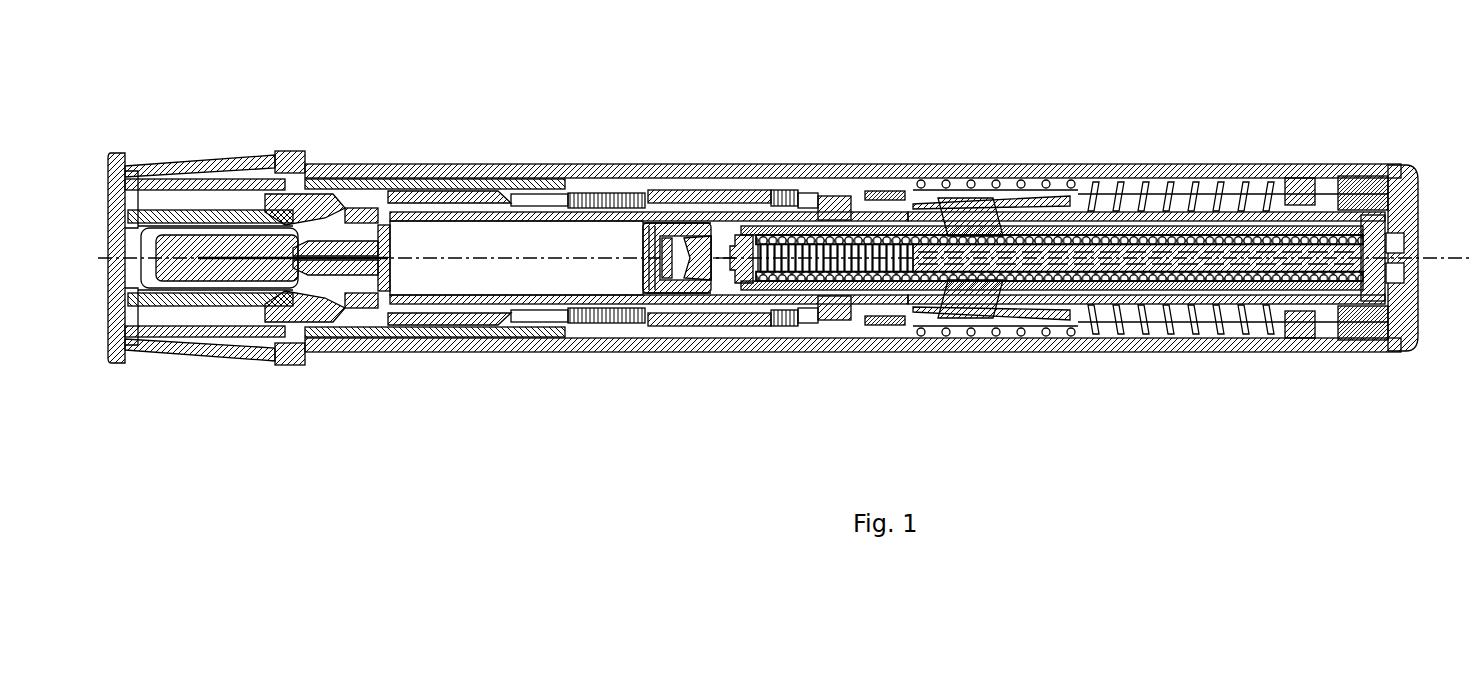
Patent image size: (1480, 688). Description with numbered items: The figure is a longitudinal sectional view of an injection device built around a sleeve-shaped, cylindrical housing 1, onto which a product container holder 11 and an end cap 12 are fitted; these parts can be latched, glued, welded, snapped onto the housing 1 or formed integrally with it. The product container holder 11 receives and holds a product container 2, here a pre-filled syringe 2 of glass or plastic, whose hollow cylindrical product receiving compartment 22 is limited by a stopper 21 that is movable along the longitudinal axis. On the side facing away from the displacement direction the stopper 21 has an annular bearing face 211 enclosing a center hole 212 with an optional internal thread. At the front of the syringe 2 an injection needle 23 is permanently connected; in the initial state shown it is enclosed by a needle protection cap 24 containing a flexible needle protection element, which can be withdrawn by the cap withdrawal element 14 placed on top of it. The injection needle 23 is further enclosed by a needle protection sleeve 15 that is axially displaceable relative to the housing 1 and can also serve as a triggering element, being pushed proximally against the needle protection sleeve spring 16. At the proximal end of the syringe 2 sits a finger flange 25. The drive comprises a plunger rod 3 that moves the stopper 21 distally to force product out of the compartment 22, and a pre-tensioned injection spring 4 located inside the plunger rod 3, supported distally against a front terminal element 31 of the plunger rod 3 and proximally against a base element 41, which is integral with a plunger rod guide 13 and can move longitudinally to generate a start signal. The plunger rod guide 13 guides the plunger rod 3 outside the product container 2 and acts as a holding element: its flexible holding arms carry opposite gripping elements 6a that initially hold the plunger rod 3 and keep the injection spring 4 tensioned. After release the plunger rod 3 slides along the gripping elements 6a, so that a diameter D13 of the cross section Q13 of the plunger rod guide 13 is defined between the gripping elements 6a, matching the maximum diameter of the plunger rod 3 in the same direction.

The housing 1 is at (729, 158).
The product container 2 is at (570, 300).
The plunger rod 3 is at (913, 280).
The injection spring 4 is at (915, 220).
The gripping elements 6a is at (960, 225).
The product container holder 11 is at (463, 312).
The end cap 12 is at (1385, 190).
The plunger rod guide 13 is at (1073, 205).
The diameter of the cross section of the plunger rod guide D13 is at (975, 235).
The cross section of the plunger rod guide Q13 is at (1059, 165).
The cap withdrawal element 14 is at (243, 148).
The needle protection sleeve 15 is at (152, 157).
The needle protection sleeve spring 16 is at (1100, 205).
The stopper 21 is at (641, 268).
The product receiving compartment 22 is at (543, 282).
The injection needle 23 is at (222, 265).
The needle protection cap 24 is at (163, 277).
The flange 25 is at (833, 305).
The front terminal element 31 is at (740, 258).
The base element 41 is at (1372, 290).
The annular bearing face 211 is at (707, 215).
The center hole 212 is at (690, 262).